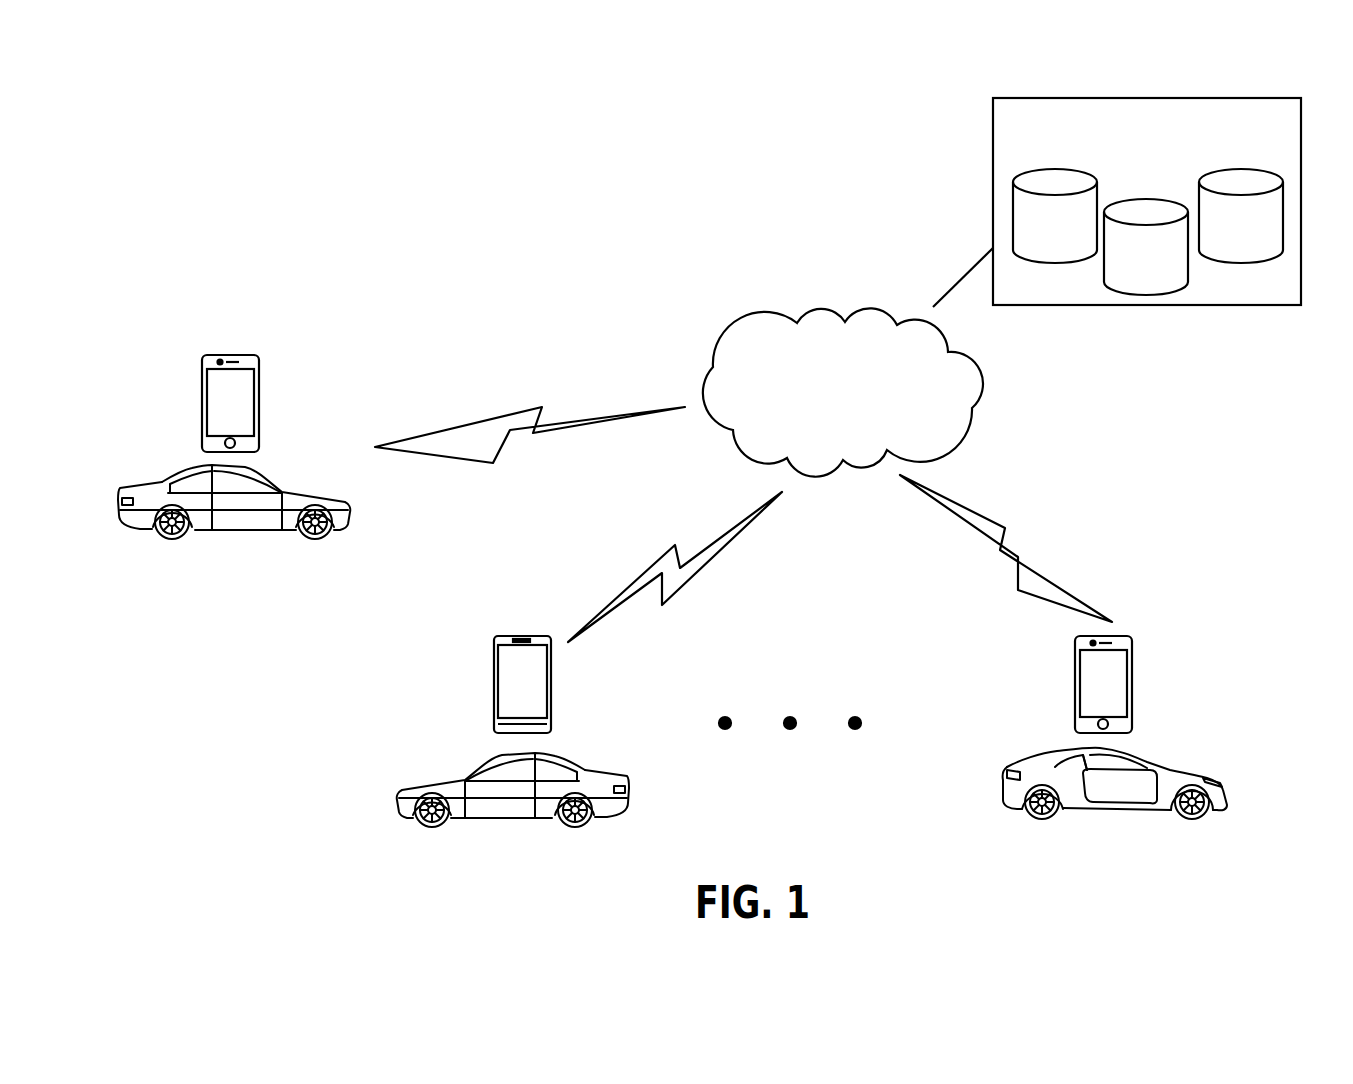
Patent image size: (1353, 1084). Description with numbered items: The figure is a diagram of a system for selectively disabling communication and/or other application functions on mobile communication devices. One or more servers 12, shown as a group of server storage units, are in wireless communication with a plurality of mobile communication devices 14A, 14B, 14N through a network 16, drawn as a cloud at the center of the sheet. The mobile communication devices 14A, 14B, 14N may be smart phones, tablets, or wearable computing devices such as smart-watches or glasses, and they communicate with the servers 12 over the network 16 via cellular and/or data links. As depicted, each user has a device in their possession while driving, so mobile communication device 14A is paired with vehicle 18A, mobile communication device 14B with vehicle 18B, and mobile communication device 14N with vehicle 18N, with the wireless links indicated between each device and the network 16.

The servers 12 is at (1127, 307).
The network 16 is at (822, 298).
The mobile communication device 14A is at (240, 352).
The mobile communication device 14B is at (523, 636).
The mobile communication device 14N is at (1120, 636).
The vehicle 18A is at (247, 532).
The vehicle 18B is at (505, 818).
The vehicle 18N is at (1123, 812).